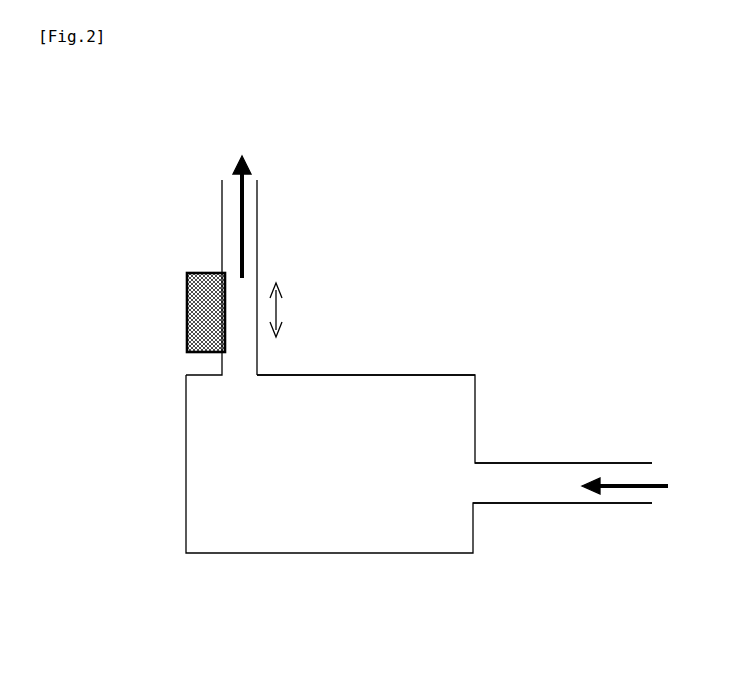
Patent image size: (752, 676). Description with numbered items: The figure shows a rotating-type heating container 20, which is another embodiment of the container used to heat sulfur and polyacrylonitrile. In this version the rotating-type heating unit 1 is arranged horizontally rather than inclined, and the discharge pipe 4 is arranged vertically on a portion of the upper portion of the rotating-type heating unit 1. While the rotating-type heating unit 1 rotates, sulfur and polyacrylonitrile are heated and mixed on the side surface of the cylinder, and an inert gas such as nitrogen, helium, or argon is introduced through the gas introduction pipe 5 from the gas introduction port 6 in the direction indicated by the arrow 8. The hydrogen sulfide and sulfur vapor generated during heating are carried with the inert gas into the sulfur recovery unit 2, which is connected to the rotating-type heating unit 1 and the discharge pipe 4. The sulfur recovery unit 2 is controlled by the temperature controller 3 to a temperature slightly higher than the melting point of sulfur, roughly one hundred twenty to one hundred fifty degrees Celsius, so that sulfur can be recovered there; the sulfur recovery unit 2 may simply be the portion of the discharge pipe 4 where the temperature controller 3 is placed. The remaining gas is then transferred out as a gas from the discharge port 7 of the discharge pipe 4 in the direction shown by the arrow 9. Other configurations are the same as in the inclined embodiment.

The rotating-type heating unit 1 is at (387, 373).
The sulfur recovery unit 2 is at (294, 310).
The temperature controller 3 is at (186, 312).
The discharge pipe 4 is at (270, 232).
The gas introduction pipe 5 is at (563, 510).
The gas introduction port 6 is at (653, 460).
The discharge port 7 is at (221, 176).
The arrow 8 is at (642, 487).
The arrow 9 is at (241, 196).
The rotating-type heating container 20 is at (389, 232).